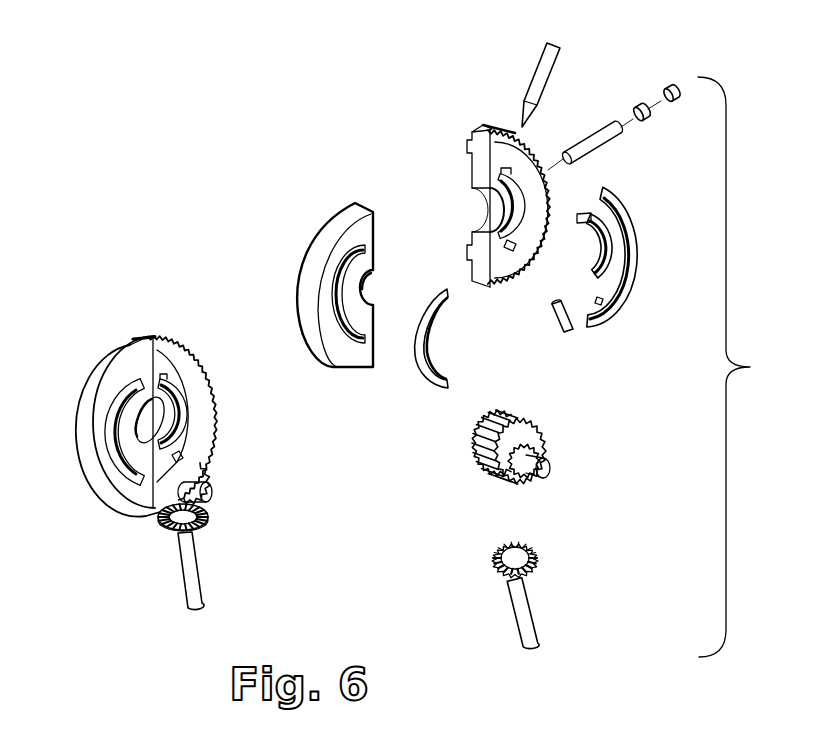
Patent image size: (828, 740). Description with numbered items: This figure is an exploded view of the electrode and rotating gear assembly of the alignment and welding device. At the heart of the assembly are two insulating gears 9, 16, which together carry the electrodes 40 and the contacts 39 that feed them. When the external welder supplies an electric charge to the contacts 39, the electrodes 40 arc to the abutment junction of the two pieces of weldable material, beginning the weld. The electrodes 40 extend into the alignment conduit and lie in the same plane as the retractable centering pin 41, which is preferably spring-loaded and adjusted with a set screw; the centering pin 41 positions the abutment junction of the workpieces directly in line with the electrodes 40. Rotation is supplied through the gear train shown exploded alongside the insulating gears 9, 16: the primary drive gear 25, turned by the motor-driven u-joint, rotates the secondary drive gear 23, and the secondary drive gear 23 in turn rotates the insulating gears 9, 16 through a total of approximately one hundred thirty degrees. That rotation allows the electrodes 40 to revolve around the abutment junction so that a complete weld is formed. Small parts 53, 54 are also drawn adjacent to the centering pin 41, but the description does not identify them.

The insulating gear 9 is at (115, 375).
The insulating gear 16 is at (203, 362).
The secondary drive gear 23 is at (205, 471).
The primary drive gear 25 is at (190, 548).
The contacts 39 is at (422, 377).
The electrodes 40 is at (540, 80).
The retractable centering pin 41 is at (594, 131).
The bushing / sleeve 53 is at (637, 103).
The bushing / sleeve 54 is at (666, 83).